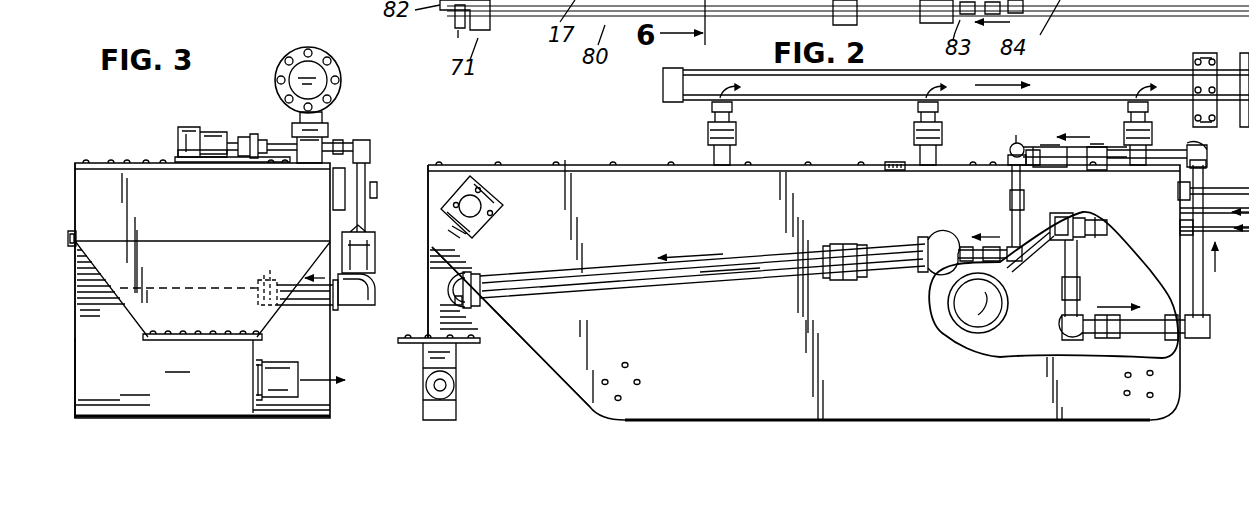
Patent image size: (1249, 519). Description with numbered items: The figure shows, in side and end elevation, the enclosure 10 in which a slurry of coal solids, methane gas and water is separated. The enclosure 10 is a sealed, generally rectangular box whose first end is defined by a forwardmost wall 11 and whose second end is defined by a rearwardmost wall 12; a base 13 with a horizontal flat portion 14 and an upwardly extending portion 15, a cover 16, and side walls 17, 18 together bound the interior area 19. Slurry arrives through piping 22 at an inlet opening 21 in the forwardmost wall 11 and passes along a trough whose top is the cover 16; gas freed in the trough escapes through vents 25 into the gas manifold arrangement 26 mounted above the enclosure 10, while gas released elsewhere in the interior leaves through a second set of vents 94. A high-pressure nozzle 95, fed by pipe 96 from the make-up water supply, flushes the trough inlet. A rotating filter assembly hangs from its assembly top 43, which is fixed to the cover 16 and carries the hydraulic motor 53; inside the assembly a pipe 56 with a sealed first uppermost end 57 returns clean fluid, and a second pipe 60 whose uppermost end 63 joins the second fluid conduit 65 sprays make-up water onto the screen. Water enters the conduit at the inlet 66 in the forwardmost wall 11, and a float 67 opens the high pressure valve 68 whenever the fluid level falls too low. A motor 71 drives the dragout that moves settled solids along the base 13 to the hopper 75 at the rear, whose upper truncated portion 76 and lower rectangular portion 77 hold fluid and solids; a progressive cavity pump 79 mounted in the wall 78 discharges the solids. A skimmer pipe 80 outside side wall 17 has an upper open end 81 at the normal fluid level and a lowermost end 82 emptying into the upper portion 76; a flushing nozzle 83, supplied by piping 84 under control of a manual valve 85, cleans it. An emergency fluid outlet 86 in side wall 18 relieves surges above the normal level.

In FIG. 3, the enclosure 10 is at (108, 131).
In FIG. 2, the enclosure 10 is at (570, 140).
In FIG. 2, the forwardmost wall 11 is at (1205, 282).
In FIG. 3, the rearwardmost wall 12 is at (92, 203).
In FIG. 2, the rearwardmost wall 12 is at (427, 218).
In FIG. 3, the base 13 is at (100, 420).
In FIG. 2, the base 13 is at (857, 427).
In FIG. 3, the horizontal flat portion 14 is at (315, 420).
In FIG. 2, the horizontal flat portion 14 is at (925, 423).
In FIG. 3, the upwardly extending portion 15 is at (82, 358).
In FIG. 2, the upwardly extending portion 15 is at (556, 366).
In FIG. 3, the cover 16 is at (93, 160).
In FIG. 2, the cover 16 is at (640, 163).
In FIG. 3, the side wall 17 is at (333, 345).
In FIG. 2, the side wall 17 is at (753, 359).
In FIG. 3, the side wall 18 is at (75, 287).
In FIG. 2, the interior area 19 is at (990, 348).
In FIG. 2, the inlet opening 21 is at (1178, 193).
In FIG. 2, the piping 22 is at (1203, 193).
In FIG. 3, the vents 25 is at (306, 165).
In FIG. 2, the vents 25 is at (712, 158).
In FIG. 3, the gas manifold arrangement 26 is at (318, 77).
In FIG. 2, the gas manifold arrangement 26 is at (850, 96).
In FIG. 3, the assembly top 43 is at (128, 158).
In FIG. 2, the assembly top 43 is at (983, 162).
In FIG. 3, the hydraulic motor 53 is at (185, 127).
In FIG. 2, the hydraulic motor 53 is at (1050, 155).
In FIG. 2, the pipe 56 is at (1100, 218).
In FIG. 2, the first uppermost end 57 is at (1080, 217).
In FIG. 2, the second pipe 60 is at (1012, 156).
In FIG. 3, the uppermost end 63 is at (196, 162).
In FIG. 2, the uppermost end 63 is at (1005, 172).
In FIG. 3, the second fluid conduit 65 is at (253, 132).
In FIG. 2, the second fluid conduit 65 is at (1101, 148).
In FIG. 2, the inlet 66 is at (1220, 232).
In FIG. 2, the float 67 is at (966, 320).
In FIG. 2, the high pressure valve 68 is at (1083, 243).
In FIG. 2, the motor 71 is at (482, 209).
In FIG. 3, the hopper 75 is at (135, 308).
In FIG. 2, the hopper 75 is at (426, 308).
In FIG. 3, the upper truncated portion 76 is at (196, 265).
In FIG. 2, the upper truncated portion 76 is at (427, 285).
In FIG. 3, the lower rectangular portion 77 is at (152, 368).
In FIG. 2, the lower rectangular portion 77 is at (420, 360).
In FIG. 3, the wall 78 is at (266, 342).
In FIG. 2, the wall 78 is at (447, 357).
In FIG. 3, the progressive cavity pump 79 is at (286, 363).
In FIG. 2, the progressive cavity pump 79 is at (452, 393).
In FIG. 3, the skimmer pipe 80 is at (368, 274).
In FIG. 2, the skimmer pipe 80 is at (642, 292).
In FIG. 3, the upper open end 81 is at (332, 242).
In FIG. 2, the upper open end 81 is at (940, 240).
In FIG. 3, the lowermost end 82 is at (260, 283).
In FIG. 2, the lowermost end 82 is at (458, 280).
In FIG. 2, the flushing nozzle 83 is at (964, 247).
In FIG. 3, the piping 84 is at (364, 165).
In FIG. 2, the piping 84 is at (1017, 226).
In FIG. 3, the valve 85 is at (373, 182).
In FIG. 2, the valve 85 is at (1031, 215).
In FIG. 3, the emergency fluid outlet 86 is at (70, 245).
In FIG. 2, the second set of vents 94 is at (893, 172).
In FIG. 2, the high-pressure nozzle 95 is at (1178, 212).
In FIG. 2, the pipe 96 is at (1214, 200).